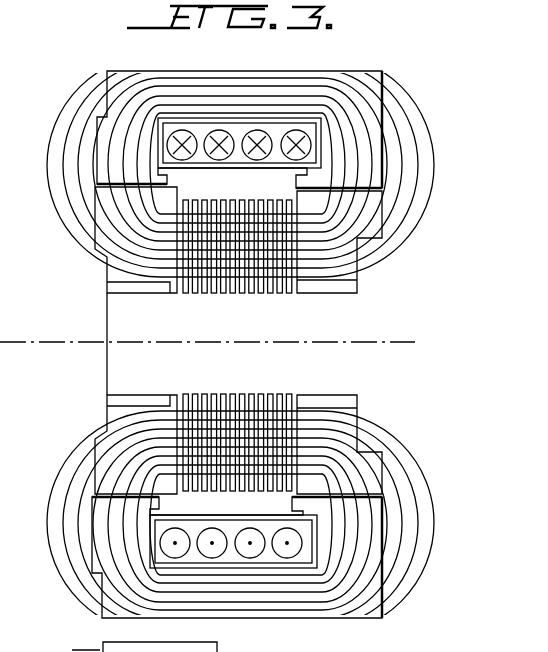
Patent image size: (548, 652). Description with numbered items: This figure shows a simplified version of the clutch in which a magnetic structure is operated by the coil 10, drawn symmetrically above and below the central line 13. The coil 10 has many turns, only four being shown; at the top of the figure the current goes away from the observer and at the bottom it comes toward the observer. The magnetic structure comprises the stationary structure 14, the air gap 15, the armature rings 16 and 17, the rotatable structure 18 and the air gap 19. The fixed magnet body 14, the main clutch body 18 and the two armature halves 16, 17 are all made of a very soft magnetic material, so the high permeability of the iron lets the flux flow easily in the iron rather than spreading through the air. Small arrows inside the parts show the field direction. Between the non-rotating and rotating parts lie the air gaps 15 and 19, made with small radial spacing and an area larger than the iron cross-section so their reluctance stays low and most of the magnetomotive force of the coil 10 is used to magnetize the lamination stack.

The coil 10 is at (228, 160).
The central line 13 is at (305, 345).
The stationary structure 14 is at (366, 71).
The air gap 15 is at (386, 188).
The armature ring 16 is at (365, 222).
The armature ring 17 is at (358, 281).
The rotatable structure 18 is at (117, 232).
The air gap 19 is at (93, 183).